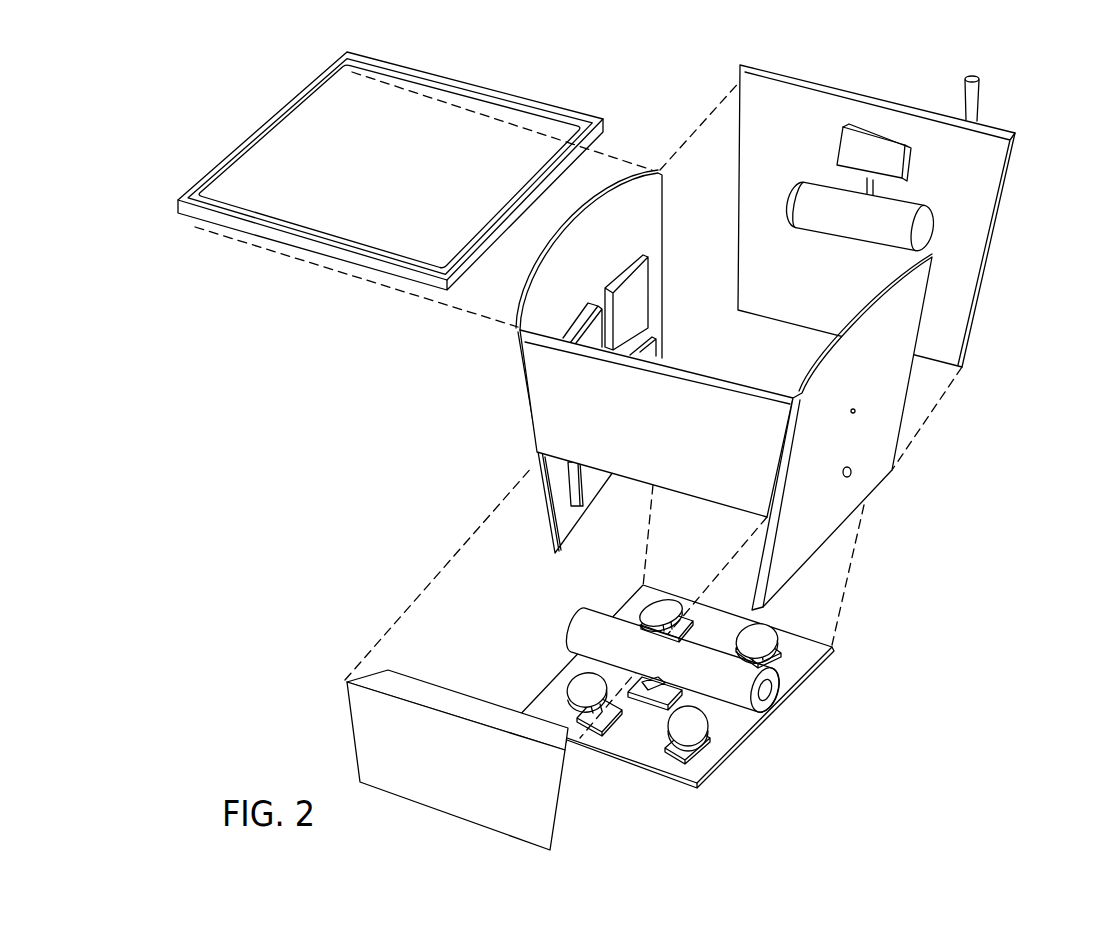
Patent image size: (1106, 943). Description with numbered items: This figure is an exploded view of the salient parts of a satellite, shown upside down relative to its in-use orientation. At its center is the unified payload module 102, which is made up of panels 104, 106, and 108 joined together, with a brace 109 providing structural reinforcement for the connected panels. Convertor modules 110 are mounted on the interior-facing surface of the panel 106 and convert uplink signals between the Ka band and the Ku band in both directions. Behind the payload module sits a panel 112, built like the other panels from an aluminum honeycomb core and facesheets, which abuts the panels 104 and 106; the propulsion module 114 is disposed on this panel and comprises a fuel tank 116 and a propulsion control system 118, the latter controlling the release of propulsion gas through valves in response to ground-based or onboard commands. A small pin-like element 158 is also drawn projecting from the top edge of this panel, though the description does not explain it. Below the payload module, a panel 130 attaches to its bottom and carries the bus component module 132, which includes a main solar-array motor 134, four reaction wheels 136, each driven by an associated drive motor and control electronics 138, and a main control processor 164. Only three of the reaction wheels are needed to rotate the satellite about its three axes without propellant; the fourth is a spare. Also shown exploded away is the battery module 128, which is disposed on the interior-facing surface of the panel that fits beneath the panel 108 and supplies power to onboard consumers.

The unified payload module 102 is at (926, 461).
The panel 104 is at (872, 360).
The panel 106 is at (607, 261).
The panel 108 is at (647, 433).
The brace 109 is at (300, 280).
The convertor modules 110 is at (637, 303).
The panel 112 is at (805, 144).
The propulsion module 114 is at (903, 216).
The fuel tank 116 is at (842, 225).
The propulsion control system 118 is at (887, 167).
The battery module 128 is at (413, 693).
The panel 130 is at (797, 667).
The bus component module 132 is at (810, 688).
The main solar-array motor 134 is at (740, 697).
The reaction wheels 136 is at (696, 722).
The drive motor 138 is at (678, 752).
The pin 158 is at (980, 80).
The main control processor 164 is at (647, 700).